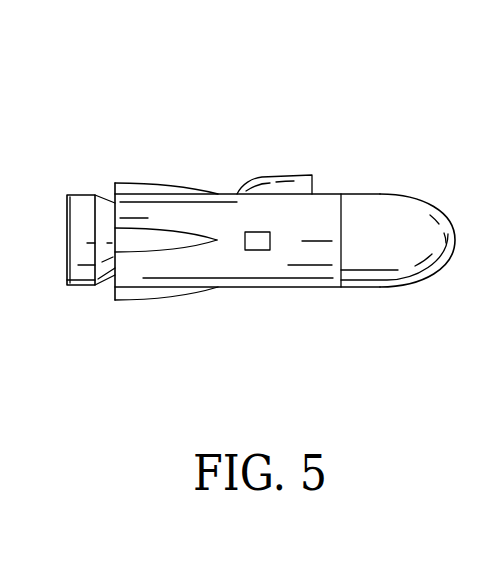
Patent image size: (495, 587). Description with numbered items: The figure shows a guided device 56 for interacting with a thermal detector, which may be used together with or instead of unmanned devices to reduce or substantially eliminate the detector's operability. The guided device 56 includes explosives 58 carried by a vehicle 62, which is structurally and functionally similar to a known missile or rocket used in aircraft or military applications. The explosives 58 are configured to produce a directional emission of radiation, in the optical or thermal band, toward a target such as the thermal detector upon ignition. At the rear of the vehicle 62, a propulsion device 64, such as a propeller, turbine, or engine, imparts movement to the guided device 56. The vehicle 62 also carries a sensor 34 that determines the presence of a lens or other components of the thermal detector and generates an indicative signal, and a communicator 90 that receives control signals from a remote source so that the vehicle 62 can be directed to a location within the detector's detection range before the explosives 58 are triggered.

The guided device 56 is at (388, 128).
The sensor 34 is at (287, 175).
The explosives 58 is at (398, 251).
The vehicle 62 is at (317, 288).
The propulsion device 64 is at (74, 287).
The communicator 90 is at (257, 250).